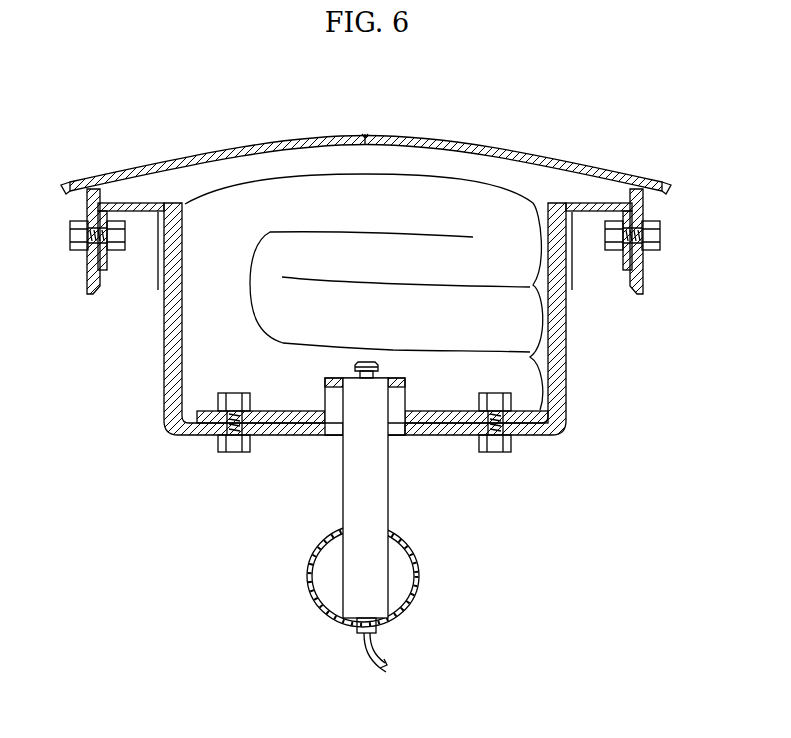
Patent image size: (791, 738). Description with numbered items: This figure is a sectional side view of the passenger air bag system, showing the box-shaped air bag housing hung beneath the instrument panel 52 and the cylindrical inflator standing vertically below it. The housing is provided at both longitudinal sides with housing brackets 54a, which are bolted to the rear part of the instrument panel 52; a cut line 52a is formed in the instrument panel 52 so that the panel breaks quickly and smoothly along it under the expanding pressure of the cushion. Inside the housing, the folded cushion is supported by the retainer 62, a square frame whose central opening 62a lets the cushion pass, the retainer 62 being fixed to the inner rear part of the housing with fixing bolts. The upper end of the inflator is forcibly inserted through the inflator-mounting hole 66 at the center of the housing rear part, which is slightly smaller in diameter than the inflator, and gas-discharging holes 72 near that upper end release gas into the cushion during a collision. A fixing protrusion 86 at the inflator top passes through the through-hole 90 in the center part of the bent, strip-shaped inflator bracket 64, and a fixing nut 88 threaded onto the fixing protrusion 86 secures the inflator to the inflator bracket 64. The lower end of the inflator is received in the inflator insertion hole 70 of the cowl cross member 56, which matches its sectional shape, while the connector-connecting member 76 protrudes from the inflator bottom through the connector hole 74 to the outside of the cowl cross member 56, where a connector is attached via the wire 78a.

The instrument panel 52 is at (197, 153).
The cut line 52a is at (365, 134).
The housing bracket 54a is at (593, 203).
The cowl cross member 56 is at (419, 560).
The retainer 62 is at (527, 423).
The opening 62a is at (437, 423).
The inflator bracket 64 is at (336, 435).
The inflator-mounting hole 66 is at (342, 440).
The inflator insertion hole 70 is at (388, 524).
The gas-discharging hole 72 is at (385, 398).
The connector hole 74 is at (387, 625).
The connector-connecting member 76 is at (361, 633).
The wire 78a is at (375, 670).
The fixing protrusion 86 is at (366, 362).
The fixing nut 88 is at (372, 363).
The through-hole 90 is at (348, 381).